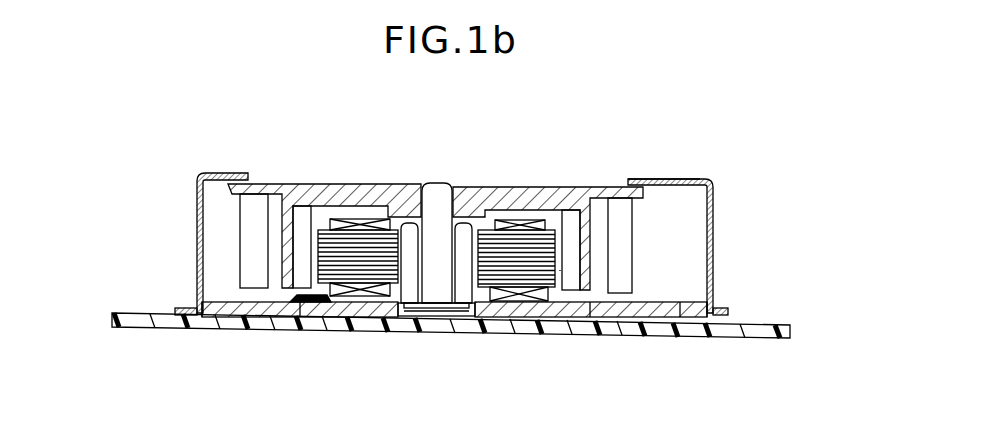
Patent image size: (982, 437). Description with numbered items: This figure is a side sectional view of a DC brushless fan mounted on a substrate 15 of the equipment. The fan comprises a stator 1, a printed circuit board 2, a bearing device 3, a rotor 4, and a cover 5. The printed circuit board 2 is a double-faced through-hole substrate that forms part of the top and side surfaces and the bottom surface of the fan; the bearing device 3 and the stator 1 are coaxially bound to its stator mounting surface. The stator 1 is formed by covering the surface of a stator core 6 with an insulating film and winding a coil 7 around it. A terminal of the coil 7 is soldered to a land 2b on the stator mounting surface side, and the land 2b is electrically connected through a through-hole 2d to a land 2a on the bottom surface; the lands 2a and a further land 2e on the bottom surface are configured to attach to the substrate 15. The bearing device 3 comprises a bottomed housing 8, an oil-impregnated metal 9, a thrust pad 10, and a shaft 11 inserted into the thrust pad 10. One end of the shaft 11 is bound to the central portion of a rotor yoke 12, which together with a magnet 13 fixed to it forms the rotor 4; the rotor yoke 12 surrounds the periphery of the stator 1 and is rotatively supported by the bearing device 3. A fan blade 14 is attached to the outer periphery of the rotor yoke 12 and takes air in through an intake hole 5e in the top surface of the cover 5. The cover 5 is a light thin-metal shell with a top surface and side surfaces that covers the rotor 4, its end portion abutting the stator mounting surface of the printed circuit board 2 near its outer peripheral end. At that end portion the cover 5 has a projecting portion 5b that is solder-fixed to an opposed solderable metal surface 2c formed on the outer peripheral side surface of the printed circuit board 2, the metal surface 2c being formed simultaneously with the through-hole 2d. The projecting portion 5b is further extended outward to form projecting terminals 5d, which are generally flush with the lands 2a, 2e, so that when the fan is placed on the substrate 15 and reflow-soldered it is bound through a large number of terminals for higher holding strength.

The stator 1 is at (547, 293).
The printed circuit board 2 is at (350, 319).
The land 2a is at (243, 320).
The land 2b is at (320, 297).
The solderable metal surface 2c is at (725, 330).
The through-hole 2d is at (303, 320).
The land 2e is at (678, 330).
The bearing device 3 is at (418, 320).
The rotor 4 is at (548, 200).
The cover 5 is at (680, 180).
The projecting portion 5b is at (716, 312).
The projecting terminal 5d is at (183, 318).
The intake hole 5e is at (600, 182).
The stator core 6 is at (583, 335).
The coil 7 is at (508, 300).
The bottomed housing 8 is at (428, 320).
The oil-impregnated metal 9 is at (462, 300).
The thrust pad 10 is at (458, 320).
The shaft 11 is at (437, 200).
The rotor yoke 12 is at (325, 190).
The magnet 13 is at (302, 215).
The fan blade 14 is at (254, 205).
The substrate 15 is at (115, 311).